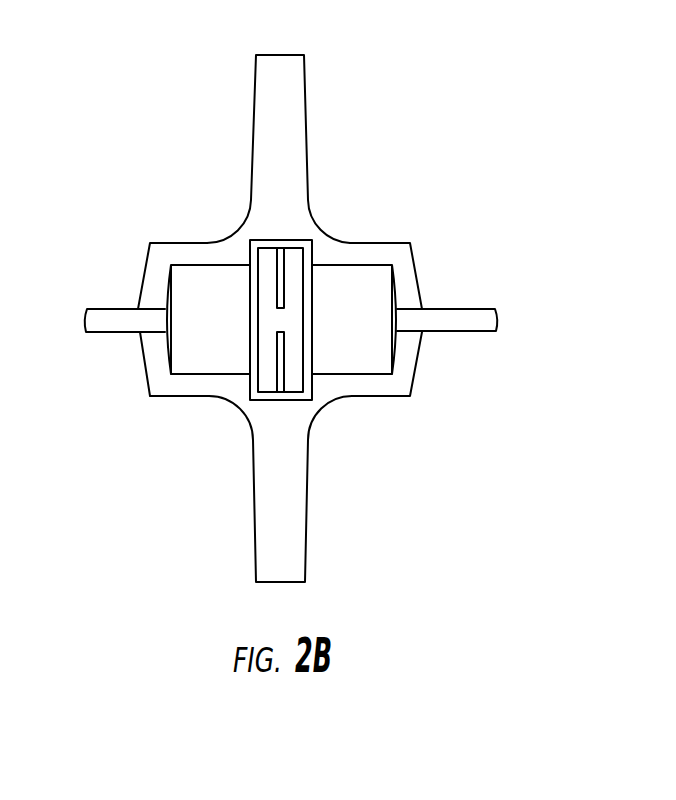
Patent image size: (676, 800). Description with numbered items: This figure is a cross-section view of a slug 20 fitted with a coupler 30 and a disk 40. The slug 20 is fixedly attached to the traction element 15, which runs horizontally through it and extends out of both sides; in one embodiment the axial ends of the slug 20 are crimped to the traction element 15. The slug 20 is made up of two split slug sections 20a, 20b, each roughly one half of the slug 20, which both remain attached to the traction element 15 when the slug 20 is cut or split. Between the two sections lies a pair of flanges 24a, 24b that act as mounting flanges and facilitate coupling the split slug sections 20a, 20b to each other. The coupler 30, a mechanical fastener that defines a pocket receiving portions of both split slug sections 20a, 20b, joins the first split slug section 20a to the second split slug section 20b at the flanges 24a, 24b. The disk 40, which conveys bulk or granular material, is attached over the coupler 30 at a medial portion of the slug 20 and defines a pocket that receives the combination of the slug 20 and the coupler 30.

The disk 40 is at (282, 65).
The slug 20 is at (343, 264).
The first split slug section 20a is at (198, 353).
The second split slug section 20b is at (370, 340).
The traction element 15 is at (113, 323).
The coupler 30 is at (290, 240).
The flange 24a is at (267, 257).
The flange 24b is at (295, 382).